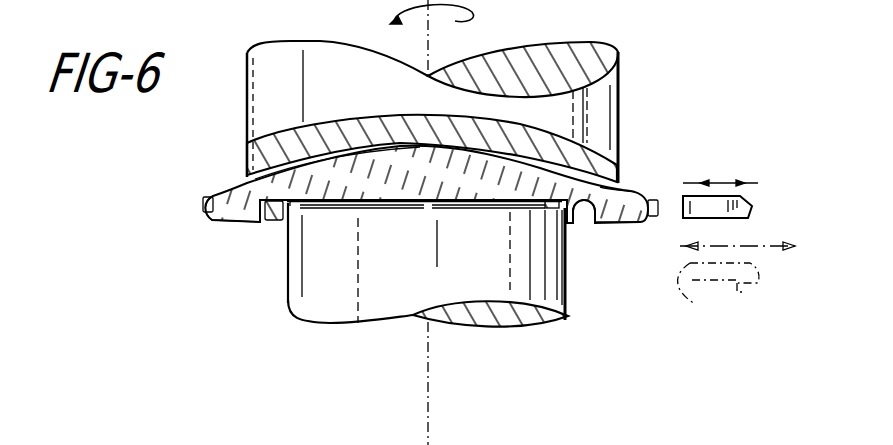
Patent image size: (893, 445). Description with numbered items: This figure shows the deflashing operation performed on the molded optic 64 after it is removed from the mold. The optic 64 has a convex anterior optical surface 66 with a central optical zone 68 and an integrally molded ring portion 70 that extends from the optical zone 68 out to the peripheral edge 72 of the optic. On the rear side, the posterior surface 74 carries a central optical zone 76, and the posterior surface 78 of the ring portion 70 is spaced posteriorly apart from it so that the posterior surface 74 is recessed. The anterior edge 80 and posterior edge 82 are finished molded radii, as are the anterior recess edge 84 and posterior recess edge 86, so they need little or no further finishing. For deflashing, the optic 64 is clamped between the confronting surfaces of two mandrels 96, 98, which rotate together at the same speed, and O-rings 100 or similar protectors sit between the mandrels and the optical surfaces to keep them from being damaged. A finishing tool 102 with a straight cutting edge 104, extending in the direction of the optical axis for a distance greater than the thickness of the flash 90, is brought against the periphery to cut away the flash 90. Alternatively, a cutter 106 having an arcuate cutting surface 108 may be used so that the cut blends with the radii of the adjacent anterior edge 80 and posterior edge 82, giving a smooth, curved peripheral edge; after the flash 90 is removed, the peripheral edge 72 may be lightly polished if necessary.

The molded optic 64 is at (243, 181).
The convex anterior optical surface 66 is at (245, 149).
The central optical zone 68 is at (428, 140).
The integrally molded ring portion 70 is at (623, 189).
The peripheral edge 72 is at (625, 223).
The posterior surface 74 is at (267, 222).
The central optical zone 76 is at (427, 203).
The posterior surface of ring portion 78 is at (226, 226).
The anterior edge 80 is at (635, 193).
The posterior edge 82 is at (230, 222).
The anterior recess edge 84 is at (584, 224).
The posterior recess edge 86 is at (597, 224).
The flash 90 is at (203, 205).
The mandrel 96 is at (587, 44).
The mandrel 98 is at (358, 332).
The O-ring 100 is at (290, 205).
The finishing tool 102 is at (740, 220).
The straight cutting edge 104 is at (683, 203).
The cutter 106 is at (750, 295).
The arcuate cutting surface 108 is at (690, 308).